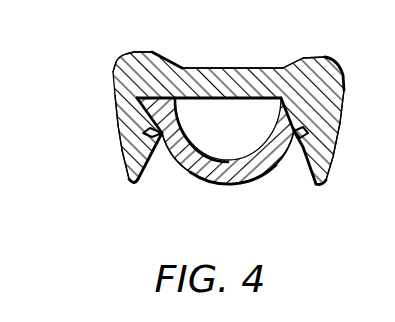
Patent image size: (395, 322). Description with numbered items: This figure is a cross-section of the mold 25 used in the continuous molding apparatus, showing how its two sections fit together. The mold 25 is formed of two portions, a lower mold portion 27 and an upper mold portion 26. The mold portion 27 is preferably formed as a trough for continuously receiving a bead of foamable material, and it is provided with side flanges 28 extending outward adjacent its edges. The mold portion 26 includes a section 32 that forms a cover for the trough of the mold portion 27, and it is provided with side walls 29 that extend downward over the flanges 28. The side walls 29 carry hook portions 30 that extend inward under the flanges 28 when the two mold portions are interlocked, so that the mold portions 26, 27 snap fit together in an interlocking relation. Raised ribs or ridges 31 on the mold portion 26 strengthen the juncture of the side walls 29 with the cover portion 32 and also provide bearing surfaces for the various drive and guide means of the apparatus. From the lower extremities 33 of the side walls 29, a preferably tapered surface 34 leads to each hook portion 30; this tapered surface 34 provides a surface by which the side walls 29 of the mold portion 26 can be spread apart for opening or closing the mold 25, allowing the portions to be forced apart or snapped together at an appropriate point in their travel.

The mold 25 is at (244, 59).
The mold portion 26 is at (182, 71).
The mold portion 27 is at (230, 184).
The side flanges 28 is at (138, 102).
The side walls 29 is at (121, 133).
The hook portions 30 is at (143, 133).
The raised ribs or ridges 31 is at (135, 52).
The cover portion 32 is at (215, 97).
The lower extremities 33 is at (133, 186).
The tapered surface 34 is at (148, 156).